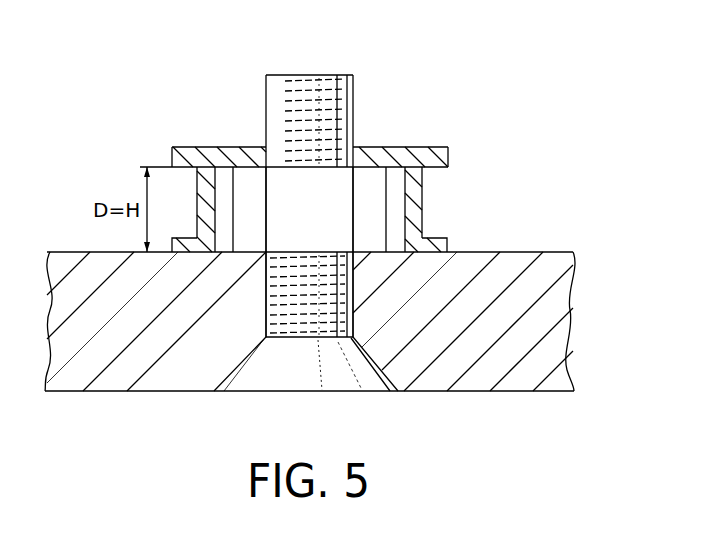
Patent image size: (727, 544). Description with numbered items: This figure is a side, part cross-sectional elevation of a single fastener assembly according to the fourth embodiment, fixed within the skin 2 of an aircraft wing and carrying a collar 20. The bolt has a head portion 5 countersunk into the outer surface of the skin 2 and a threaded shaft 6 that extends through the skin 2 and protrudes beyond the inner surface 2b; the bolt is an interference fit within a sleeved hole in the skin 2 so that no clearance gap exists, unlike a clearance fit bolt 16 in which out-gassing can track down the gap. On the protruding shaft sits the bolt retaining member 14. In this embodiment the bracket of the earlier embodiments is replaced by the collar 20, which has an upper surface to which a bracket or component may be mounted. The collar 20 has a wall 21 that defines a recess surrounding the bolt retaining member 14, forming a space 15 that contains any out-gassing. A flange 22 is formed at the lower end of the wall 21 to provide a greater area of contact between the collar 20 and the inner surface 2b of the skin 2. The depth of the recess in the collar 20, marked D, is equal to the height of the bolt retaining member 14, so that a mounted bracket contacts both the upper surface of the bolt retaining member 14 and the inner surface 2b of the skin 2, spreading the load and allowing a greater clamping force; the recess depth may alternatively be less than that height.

The skin 2 is at (63, 393).
The inner surface 2b is at (63, 250).
The head portion 5 is at (310, 384).
The threaded shaft 6 is at (352, 288).
The bolt retaining member 14 is at (374, 178).
The space 15 is at (396, 185).
The bolt 16 is at (258, 288).
The collar 20 is at (181, 146).
The wall 21 is at (423, 214).
The flange 22 is at (433, 253).